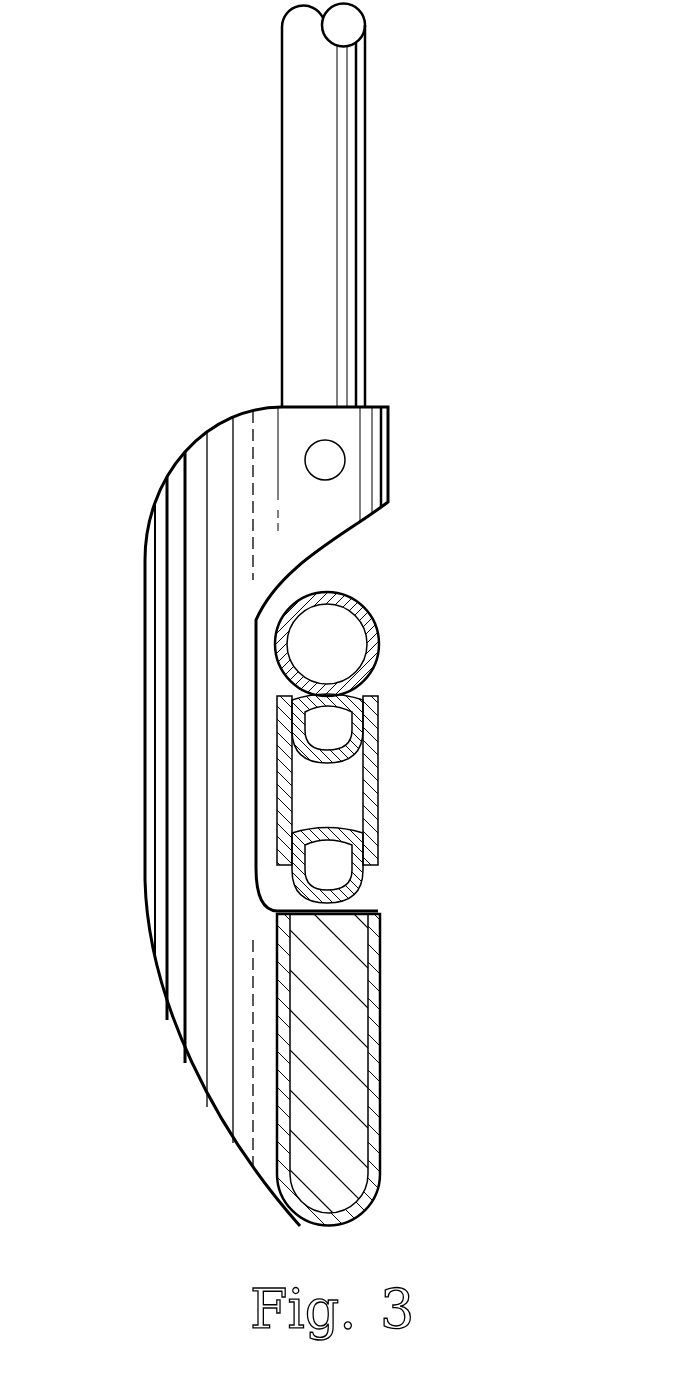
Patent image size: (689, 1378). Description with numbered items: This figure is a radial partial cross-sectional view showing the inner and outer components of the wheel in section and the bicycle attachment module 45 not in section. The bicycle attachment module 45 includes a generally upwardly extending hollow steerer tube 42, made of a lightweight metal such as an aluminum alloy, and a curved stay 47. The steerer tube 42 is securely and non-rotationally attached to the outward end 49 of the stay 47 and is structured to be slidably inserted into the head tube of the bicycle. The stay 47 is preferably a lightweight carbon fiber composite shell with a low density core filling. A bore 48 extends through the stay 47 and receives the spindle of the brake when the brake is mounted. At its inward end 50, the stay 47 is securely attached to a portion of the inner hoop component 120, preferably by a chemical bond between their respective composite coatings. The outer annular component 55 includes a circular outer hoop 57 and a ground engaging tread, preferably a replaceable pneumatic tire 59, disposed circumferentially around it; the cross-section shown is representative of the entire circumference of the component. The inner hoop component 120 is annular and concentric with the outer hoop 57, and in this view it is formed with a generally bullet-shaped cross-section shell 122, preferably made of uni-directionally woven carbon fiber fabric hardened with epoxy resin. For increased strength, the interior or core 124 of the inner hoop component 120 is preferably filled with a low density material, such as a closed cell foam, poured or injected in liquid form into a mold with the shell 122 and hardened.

The steerer tube 42 is at (296, 161).
The bicycle attachment module 45 is at (205, 338).
The stay 47 is at (200, 760).
The bore 48 is at (330, 460).
The outward end 49 is at (222, 482).
The inward end 50 is at (250, 1110).
The outer annular component 55 is at (412, 722).
The outer hoop 57 is at (372, 805).
The pneumatic tire 59 is at (372, 613).
The inner hoop component 120 is at (420, 1081).
The shell 122 is at (372, 978).
The core 124 is at (340, 1173).